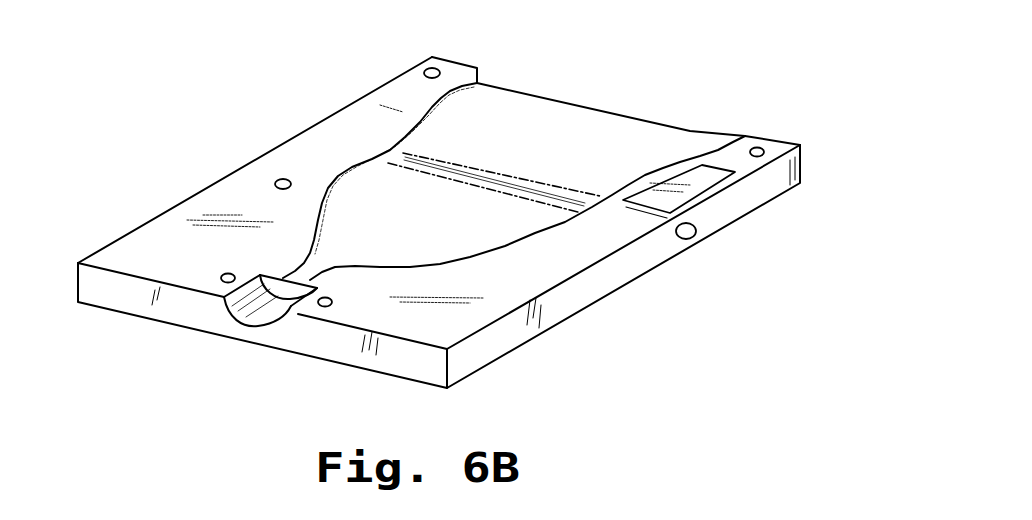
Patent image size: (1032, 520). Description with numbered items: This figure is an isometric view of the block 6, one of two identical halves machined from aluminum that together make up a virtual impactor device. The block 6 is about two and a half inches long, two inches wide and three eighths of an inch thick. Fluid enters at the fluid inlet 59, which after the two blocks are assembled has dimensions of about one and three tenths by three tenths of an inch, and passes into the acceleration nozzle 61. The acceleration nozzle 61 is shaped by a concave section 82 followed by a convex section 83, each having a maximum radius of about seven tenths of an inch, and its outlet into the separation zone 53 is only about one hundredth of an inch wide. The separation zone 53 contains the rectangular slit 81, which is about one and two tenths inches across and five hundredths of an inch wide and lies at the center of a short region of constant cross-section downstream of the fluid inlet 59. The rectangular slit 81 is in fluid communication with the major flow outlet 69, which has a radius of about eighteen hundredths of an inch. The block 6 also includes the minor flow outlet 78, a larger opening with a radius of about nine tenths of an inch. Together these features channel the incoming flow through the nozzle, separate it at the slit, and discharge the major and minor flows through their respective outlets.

The block 6 is at (178, 245).
The separation zone 53 is at (413, 130).
The fluid inlet 59 is at (487, 222).
The acceleration nozzle 61 is at (603, 128).
The major flow outlet 69 is at (689, 239).
The minor flow outlet 78 is at (245, 313).
The rectangular slit 81 is at (468, 165).
The concave section 82 is at (760, 170).
The convex section 83 is at (697, 198).